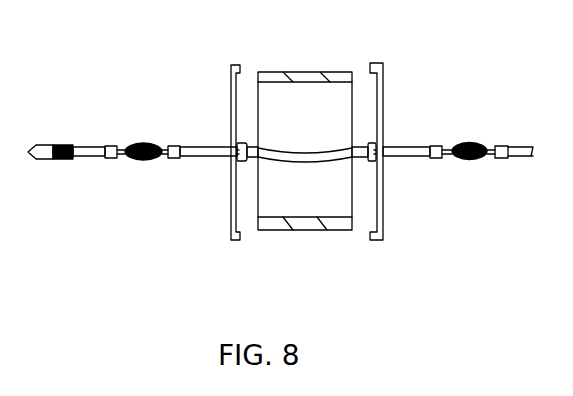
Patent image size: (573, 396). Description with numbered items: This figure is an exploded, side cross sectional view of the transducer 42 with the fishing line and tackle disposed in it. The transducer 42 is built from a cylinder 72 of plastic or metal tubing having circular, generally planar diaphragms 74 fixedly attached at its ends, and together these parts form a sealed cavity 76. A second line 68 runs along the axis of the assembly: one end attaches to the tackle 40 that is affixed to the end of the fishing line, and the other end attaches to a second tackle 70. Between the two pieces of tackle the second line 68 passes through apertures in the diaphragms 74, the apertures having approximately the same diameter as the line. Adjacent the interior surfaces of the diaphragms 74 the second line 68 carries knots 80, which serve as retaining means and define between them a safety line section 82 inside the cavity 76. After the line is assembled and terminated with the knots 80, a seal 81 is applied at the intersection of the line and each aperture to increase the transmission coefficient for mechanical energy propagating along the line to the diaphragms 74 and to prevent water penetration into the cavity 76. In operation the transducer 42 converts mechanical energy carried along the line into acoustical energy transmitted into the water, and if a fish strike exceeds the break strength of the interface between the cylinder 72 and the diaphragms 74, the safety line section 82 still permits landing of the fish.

The tackle 40 is at (98, 138).
The second tackle 70 is at (427, 140).
The second line 68 is at (195, 153).
The diaphragms 74 is at (242, 65).
The seal 81 is at (235, 146).
The knots 80 is at (236, 160).
The transducer 42 is at (404, 237).
The cylinder 72 is at (302, 73).
The sealed cavity 76 is at (302, 208).
The safety line section 82 is at (317, 157).